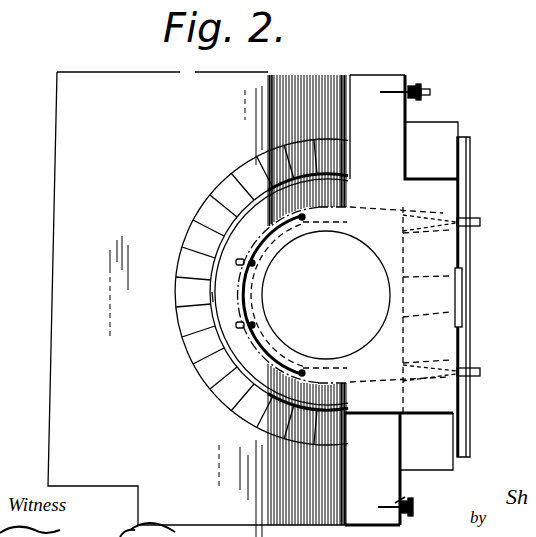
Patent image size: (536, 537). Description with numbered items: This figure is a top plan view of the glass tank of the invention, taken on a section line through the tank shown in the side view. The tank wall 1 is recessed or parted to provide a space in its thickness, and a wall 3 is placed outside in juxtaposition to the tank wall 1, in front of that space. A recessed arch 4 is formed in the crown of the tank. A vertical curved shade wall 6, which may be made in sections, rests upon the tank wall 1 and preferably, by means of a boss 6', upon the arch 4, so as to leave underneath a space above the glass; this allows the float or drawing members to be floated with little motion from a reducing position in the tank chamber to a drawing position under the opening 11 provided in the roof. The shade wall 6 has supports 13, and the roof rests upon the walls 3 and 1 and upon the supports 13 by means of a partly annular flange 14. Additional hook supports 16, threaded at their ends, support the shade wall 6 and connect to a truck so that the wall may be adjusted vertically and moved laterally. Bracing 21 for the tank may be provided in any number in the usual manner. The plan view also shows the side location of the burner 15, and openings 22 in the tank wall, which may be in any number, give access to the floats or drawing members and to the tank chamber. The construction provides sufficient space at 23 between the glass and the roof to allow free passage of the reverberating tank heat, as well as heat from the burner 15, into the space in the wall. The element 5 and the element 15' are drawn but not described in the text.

The tank wall 1 is at (385, 117).
The wall 3 is at (445, 155).
The recessed arch 4 is at (230, 182).
The casing 5 is at (114, 79).
The vertical curved shade wall 6 is at (249, 292).
The boss 6' is at (175, 295).
The opening 11 is at (346, 247).
The supports 13 is at (254, 323).
The partly annular flange 14 is at (278, 348).
The burner 15 is at (487, 356).
The bolt 15' is at (493, 231).
The hook supports 16 is at (256, 268).
The bracing 21 is at (413, 86).
The openings 22 is at (470, 301).
The space 23 is at (351, 233).